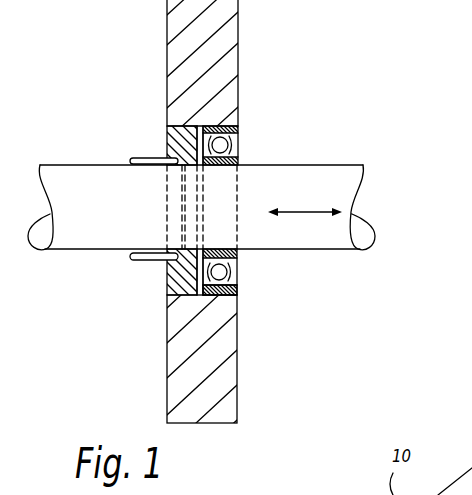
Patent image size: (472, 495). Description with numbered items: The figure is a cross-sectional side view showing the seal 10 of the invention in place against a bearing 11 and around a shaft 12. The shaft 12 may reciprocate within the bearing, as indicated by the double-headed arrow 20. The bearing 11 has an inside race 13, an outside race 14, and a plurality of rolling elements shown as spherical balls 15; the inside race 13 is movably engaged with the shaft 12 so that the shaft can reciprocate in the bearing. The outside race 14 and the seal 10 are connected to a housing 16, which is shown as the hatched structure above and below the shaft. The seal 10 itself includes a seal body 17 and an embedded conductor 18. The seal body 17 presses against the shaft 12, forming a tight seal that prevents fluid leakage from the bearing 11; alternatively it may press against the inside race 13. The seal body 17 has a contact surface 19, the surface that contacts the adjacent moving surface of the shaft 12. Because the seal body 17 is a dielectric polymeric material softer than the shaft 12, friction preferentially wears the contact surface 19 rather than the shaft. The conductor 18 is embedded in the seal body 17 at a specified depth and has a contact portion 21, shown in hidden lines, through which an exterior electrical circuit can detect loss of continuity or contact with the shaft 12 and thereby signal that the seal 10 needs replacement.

The seal 10 is at (124, 287).
The bearing 11 is at (247, 158).
The shaft 12 is at (350, 178).
The inside race 13 is at (237, 251).
The outside race 14 is at (237, 290).
The balls 15 is at (219, 272).
The housing 16 is at (217, 424).
The seal body 17 is at (167, 126).
The conductor 18 is at (170, 138).
The contact surface 19 is at (166, 247).
The arrow 20 is at (303, 212).
The contact portion 21 is at (172, 200).